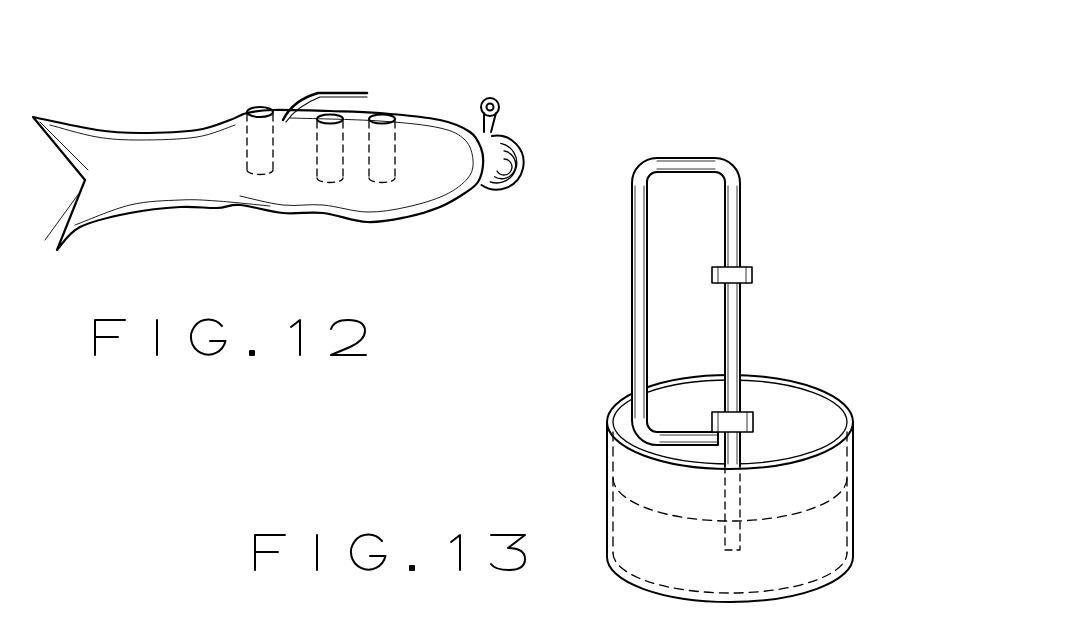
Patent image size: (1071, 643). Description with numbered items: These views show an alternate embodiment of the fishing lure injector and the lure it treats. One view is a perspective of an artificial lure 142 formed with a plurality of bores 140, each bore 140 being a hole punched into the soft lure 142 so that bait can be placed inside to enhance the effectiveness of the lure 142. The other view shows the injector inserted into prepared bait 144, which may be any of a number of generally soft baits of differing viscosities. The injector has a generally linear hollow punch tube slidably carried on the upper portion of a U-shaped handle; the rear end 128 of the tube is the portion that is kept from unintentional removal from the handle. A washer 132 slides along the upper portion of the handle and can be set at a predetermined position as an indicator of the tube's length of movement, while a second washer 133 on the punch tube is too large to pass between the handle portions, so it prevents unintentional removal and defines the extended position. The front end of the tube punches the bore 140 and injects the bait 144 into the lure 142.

In FIG. 12, the bore 140 is at (255, 110).
In FIG. 12, the artificial lure 142 is at (220, 180).
In FIG. 13, the rear end 128 is at (733, 325).
In FIG. 13, the washer 132 is at (737, 275).
In FIG. 13, the second washer 133 is at (737, 422).
In FIG. 13, the bait 144 is at (628, 503).